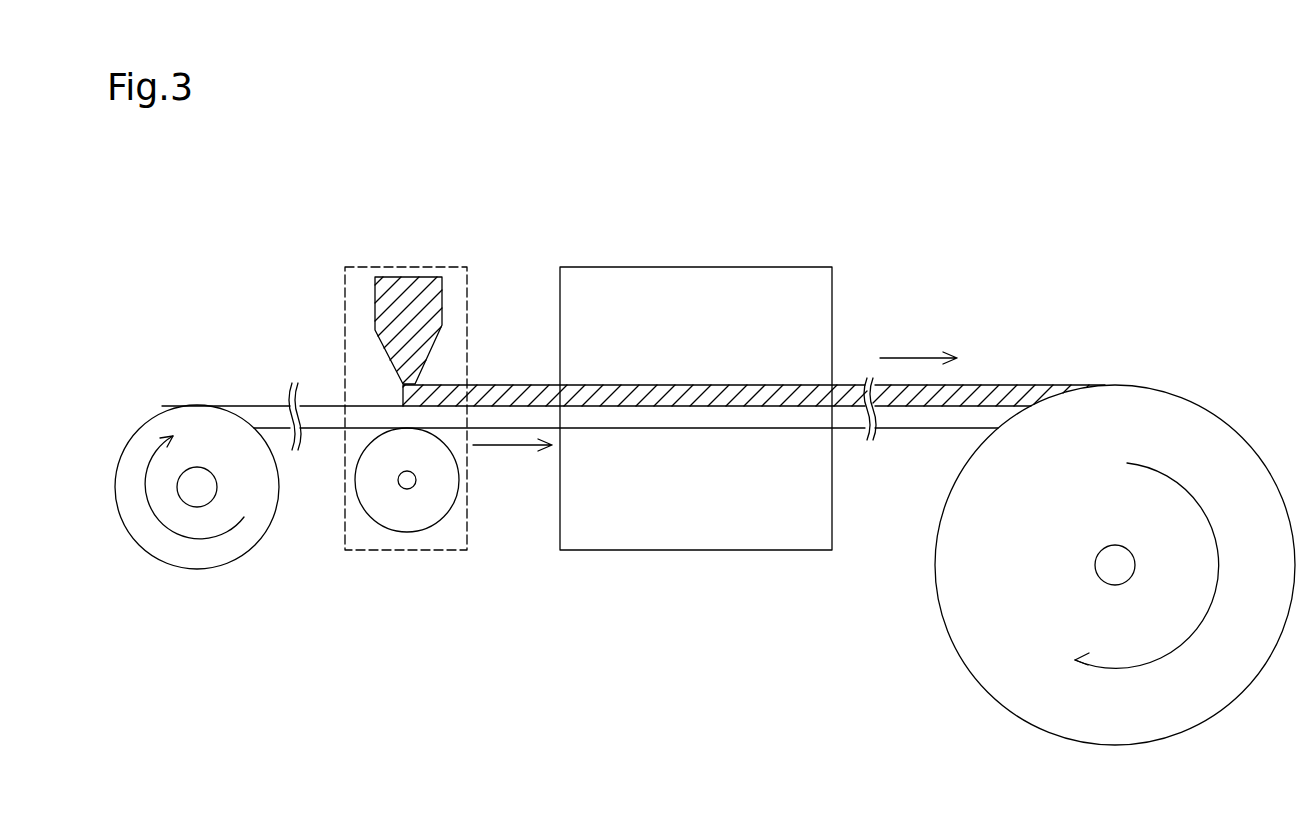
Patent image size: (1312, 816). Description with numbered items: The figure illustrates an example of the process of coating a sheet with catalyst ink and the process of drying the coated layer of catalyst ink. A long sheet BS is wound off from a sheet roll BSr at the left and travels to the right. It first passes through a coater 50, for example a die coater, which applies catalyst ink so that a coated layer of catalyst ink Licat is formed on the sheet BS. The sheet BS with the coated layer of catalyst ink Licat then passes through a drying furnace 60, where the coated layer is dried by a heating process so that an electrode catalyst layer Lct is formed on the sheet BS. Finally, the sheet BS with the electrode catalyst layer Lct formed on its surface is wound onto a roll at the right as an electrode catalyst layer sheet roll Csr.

The coater 50 is at (441, 393).
The drying furnace 60 is at (696, 393).
The sheet BS is at (313, 413).
The sheet roll BSr is at (203, 570).
The coated layer of catalyst ink Licat is at (497, 377).
The electrode catalyst layer Lct is at (971, 387).
The electrode catalyst layer sheet roll Csr is at (1189, 418).